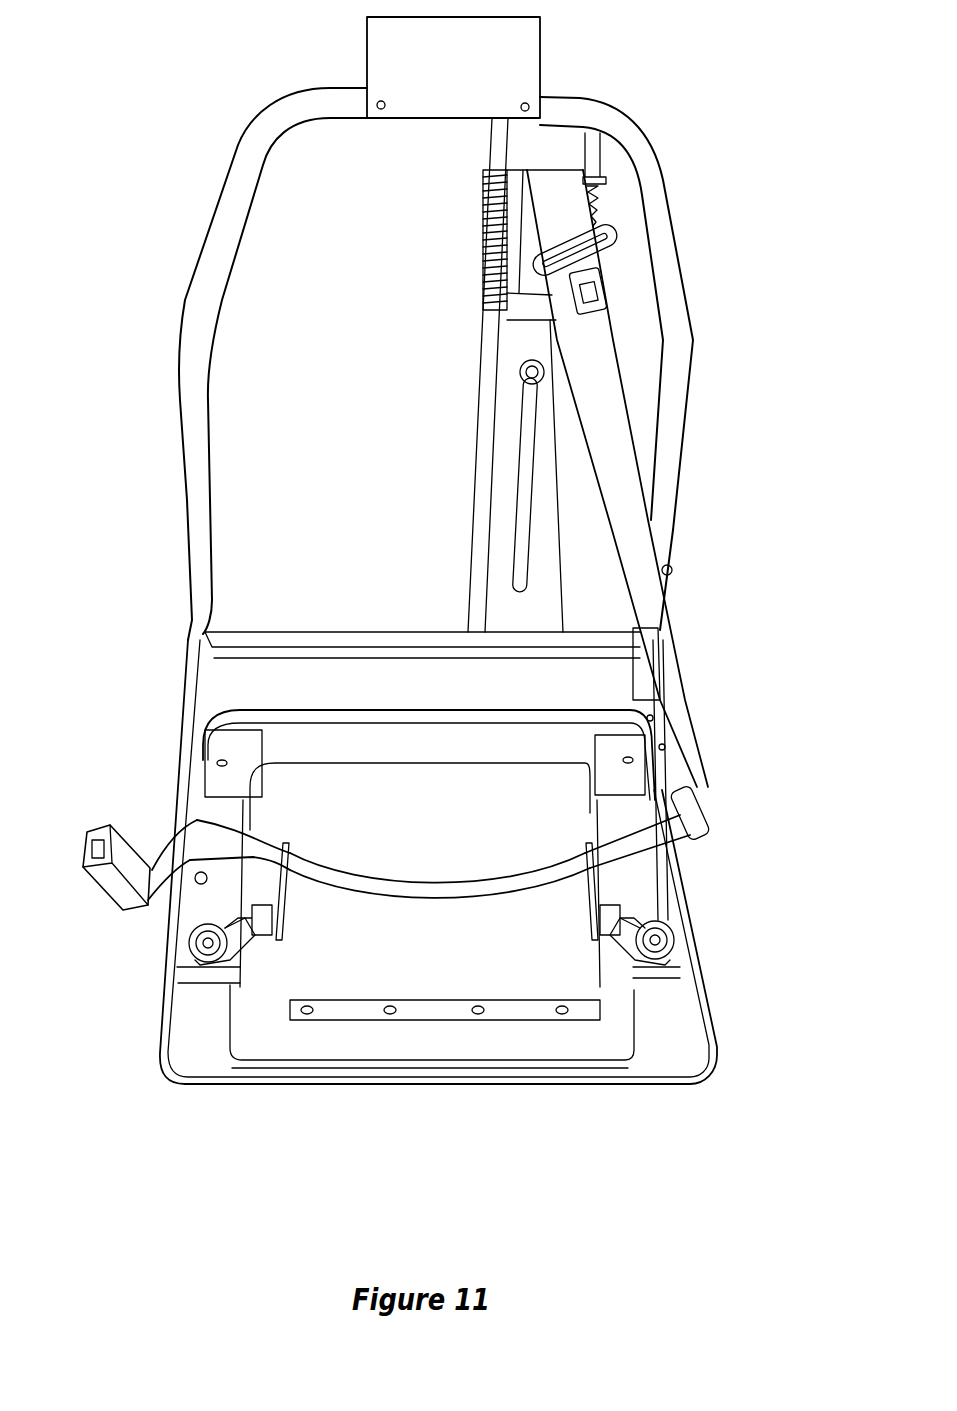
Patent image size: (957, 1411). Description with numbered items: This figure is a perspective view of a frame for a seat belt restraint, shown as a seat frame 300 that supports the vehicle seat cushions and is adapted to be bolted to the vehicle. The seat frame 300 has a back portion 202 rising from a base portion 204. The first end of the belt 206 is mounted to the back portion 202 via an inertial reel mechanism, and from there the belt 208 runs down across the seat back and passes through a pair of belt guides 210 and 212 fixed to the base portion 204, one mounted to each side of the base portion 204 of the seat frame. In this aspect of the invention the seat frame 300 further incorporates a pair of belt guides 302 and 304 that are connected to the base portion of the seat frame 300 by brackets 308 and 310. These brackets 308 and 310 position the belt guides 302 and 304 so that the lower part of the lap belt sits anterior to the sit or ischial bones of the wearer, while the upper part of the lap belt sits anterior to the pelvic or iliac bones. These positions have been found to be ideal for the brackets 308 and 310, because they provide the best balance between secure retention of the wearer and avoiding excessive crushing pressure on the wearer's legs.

The seat frame 300 is at (690, 204).
The back portion 202 is at (680, 362).
The base portion 204 is at (688, 1030).
The belt 206 is at (520, 250).
The belt 208 is at (656, 633).
The belt guide 210 is at (707, 817).
The belt guide 212 is at (185, 818).
The belt guide 302 is at (290, 855).
The belt guide 304 is at (585, 852).
The bracket 308 is at (226, 950).
The bracket 310 is at (632, 964).